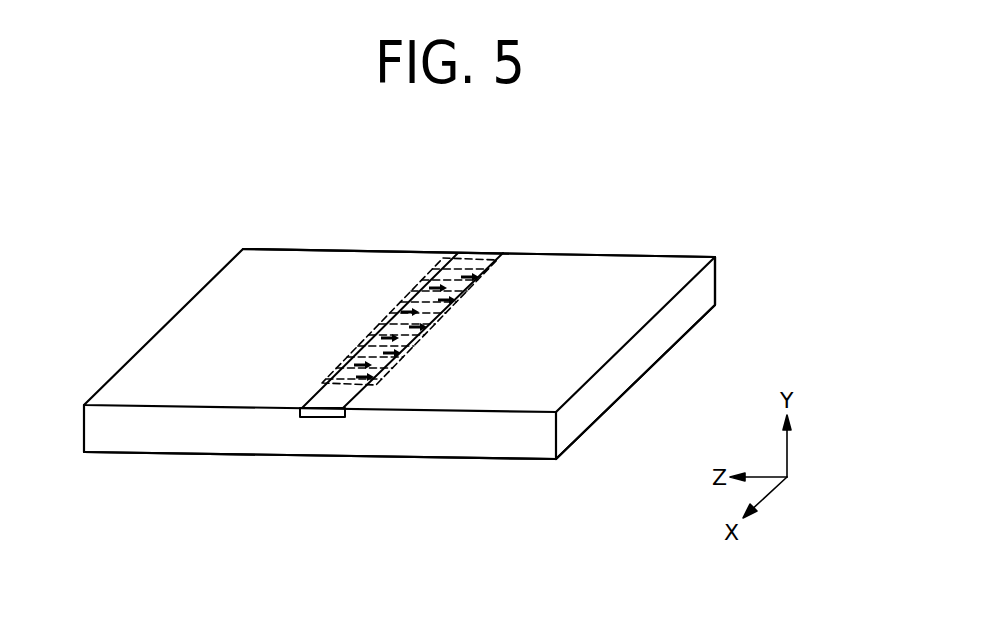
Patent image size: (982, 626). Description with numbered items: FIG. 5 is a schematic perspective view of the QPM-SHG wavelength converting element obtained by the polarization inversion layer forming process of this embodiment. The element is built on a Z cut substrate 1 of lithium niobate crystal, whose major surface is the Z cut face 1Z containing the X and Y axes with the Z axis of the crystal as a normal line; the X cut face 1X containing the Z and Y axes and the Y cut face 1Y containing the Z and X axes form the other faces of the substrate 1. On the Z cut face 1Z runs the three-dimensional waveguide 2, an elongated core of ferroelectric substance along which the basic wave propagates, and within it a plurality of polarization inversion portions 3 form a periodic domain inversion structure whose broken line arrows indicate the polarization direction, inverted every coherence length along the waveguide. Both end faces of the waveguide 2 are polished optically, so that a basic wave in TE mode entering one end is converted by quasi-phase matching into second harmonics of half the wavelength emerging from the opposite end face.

The substrate 1 is at (632, 342).
The X cut face 1X is at (242, 440).
The Y cut face 1Y is at (590, 267).
The Z cut face 1Z is at (678, 325).
The three-dimensional waveguide 2 is at (325, 418).
The polarization inversion portions 3 is at (463, 258).